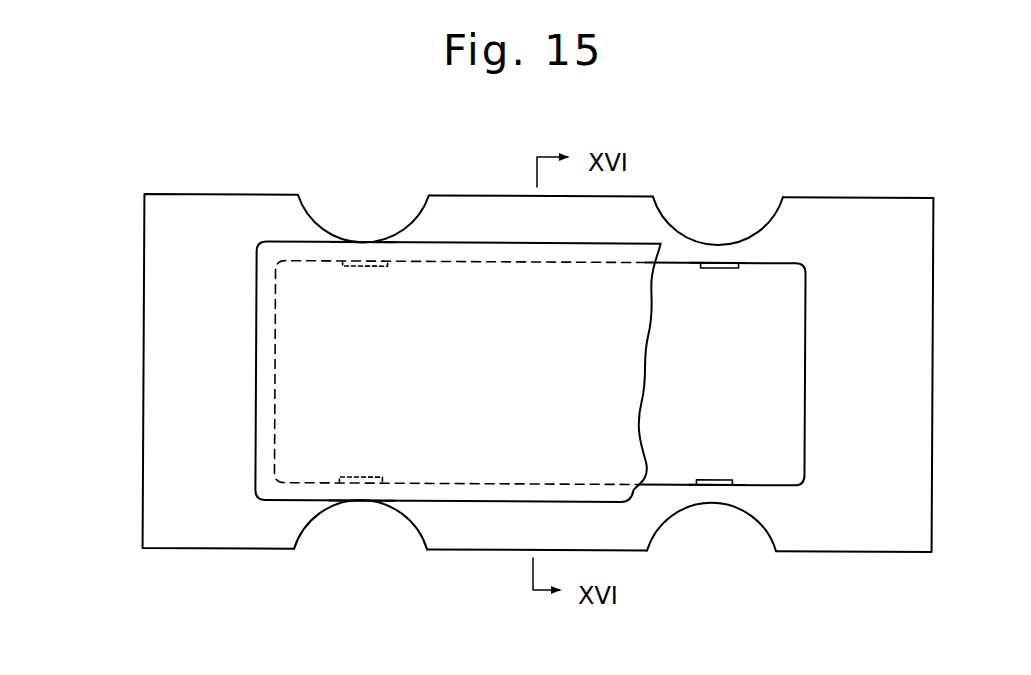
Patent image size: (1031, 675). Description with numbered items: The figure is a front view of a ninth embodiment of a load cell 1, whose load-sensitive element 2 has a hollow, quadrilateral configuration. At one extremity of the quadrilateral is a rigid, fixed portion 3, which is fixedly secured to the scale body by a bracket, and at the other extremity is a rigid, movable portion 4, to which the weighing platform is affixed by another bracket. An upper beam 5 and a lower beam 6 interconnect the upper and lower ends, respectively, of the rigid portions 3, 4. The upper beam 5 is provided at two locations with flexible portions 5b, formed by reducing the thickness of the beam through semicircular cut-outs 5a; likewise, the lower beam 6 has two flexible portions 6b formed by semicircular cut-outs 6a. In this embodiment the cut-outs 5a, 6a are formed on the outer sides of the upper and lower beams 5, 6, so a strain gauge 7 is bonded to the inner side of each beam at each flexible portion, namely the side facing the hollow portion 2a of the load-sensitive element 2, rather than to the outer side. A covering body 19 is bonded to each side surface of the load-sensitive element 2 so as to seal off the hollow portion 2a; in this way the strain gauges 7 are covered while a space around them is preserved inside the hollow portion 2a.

The load cell 1 is at (199, 188).
The load-sensitive element 2 is at (538, 373).
The hollow portion 2a is at (539, 373).
The fixed portion 3 is at (220, 371).
The movable portion 4 is at (854, 374).
The upper beam 5 is at (541, 195).
The semicircular cut-outs 5a is at (540, 220).
The flexible portions 5b is at (538, 252).
The lower beam 6 is at (537, 549).
The semicircular cut-outs 6a is at (535, 526).
The flexible portions 6b is at (536, 493).
The strain gauge 7 is at (538, 373).
The covering body 19 is at (457, 372).